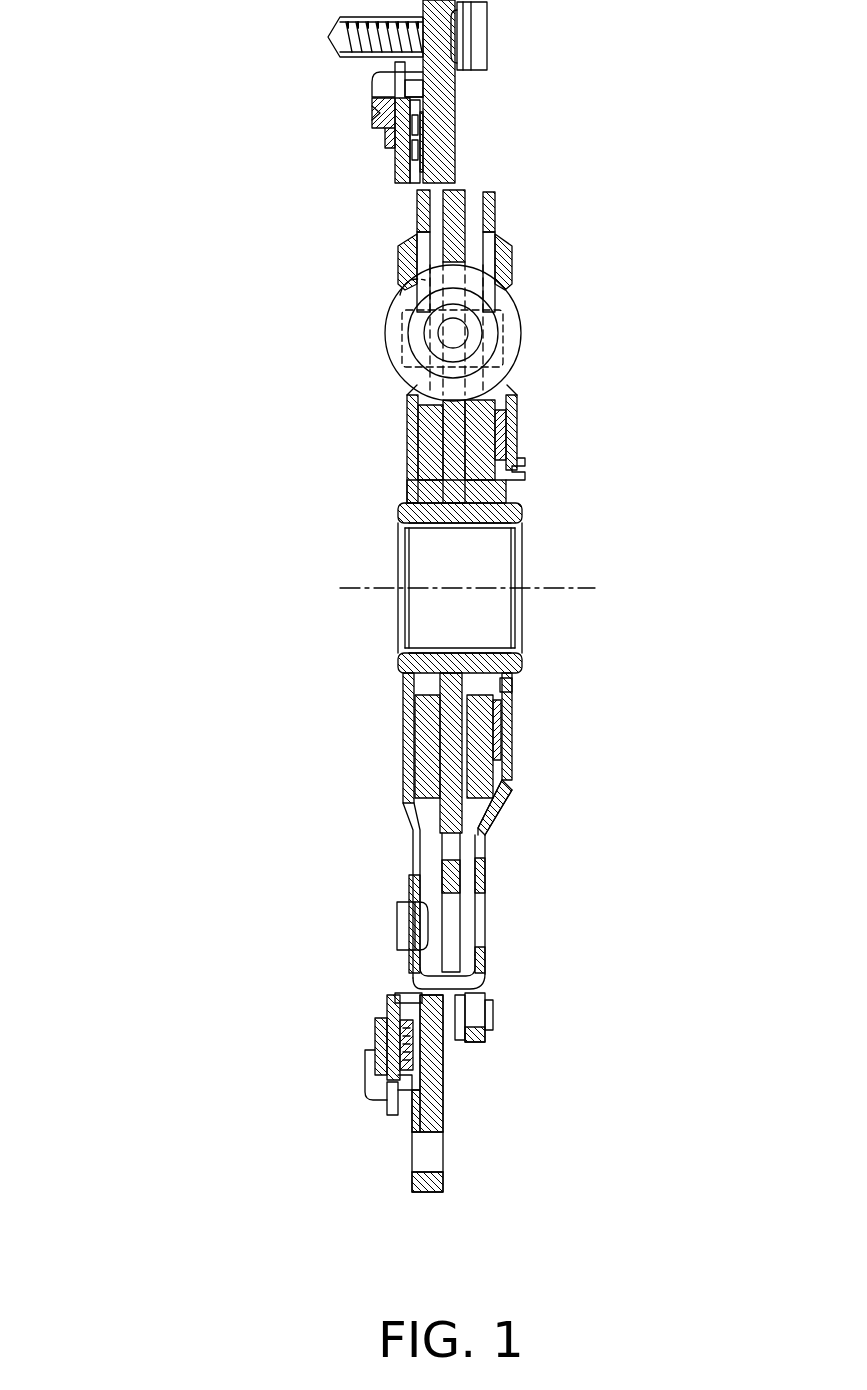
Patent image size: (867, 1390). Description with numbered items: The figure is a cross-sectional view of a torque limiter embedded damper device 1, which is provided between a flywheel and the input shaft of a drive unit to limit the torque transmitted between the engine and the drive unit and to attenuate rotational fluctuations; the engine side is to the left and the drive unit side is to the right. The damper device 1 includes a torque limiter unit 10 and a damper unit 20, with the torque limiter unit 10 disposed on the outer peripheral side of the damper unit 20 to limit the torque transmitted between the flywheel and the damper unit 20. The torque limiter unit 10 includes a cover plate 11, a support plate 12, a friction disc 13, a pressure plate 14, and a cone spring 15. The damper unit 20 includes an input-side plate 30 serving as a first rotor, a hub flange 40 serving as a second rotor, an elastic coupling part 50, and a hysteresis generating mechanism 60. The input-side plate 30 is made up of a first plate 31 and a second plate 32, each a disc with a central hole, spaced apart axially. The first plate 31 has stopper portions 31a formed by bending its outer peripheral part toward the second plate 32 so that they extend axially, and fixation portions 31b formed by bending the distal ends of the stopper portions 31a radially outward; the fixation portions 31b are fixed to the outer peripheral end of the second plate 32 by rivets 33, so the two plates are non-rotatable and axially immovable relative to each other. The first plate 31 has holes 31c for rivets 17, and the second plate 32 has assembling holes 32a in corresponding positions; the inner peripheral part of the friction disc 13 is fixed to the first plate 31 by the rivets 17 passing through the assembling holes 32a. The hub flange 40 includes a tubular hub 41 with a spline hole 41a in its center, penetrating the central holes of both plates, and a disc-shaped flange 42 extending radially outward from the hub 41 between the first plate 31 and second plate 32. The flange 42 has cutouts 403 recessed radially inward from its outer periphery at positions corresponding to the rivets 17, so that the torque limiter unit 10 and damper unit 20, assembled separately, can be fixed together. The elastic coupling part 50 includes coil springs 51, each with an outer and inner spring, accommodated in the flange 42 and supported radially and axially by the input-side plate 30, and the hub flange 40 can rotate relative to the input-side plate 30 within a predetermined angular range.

The damper device 1 is at (170, 84).
The torque limiter unit 10 is at (358, 117).
The cover plate 11 is at (456, 97).
The support plate 12 is at (360, 105).
The friction disc 13 is at (458, 127).
The pressure plate 14 is at (400, 175).
The cone spring 15 is at (395, 150).
The rivet 17 is at (397, 918).
The damper unit 20 is at (391, 275).
The input-side plate 30 is at (510, 195).
The first plate 31 is at (420, 718).
The stopper portion 31a is at (412, 980).
The fixation portion 31b is at (470, 1045).
The hole 31c is at (408, 928).
The second plate 32 is at (505, 715).
The assembling hole 32a is at (483, 955).
The rivet 33 is at (495, 1010).
The hub flange 40 is at (416, 588).
The hub 41 is at (400, 515).
The spline hole 41a is at (485, 658).
The flange 42 is at (495, 808).
The cutout 403 is at (460, 910).
The elastic coupling part 50 is at (523, 300).
The coil spring 51 is at (515, 333).
The hysteresis generating mechanism 60 is at (407, 458).